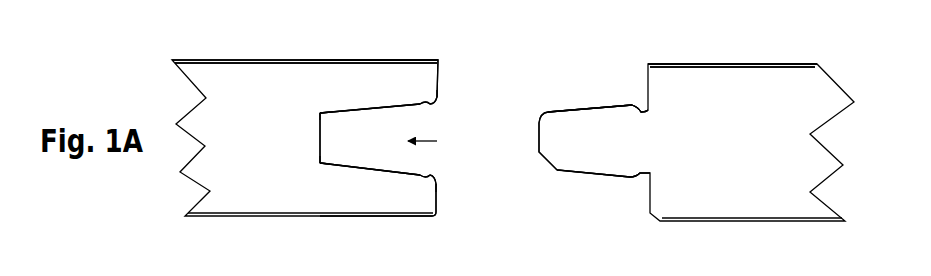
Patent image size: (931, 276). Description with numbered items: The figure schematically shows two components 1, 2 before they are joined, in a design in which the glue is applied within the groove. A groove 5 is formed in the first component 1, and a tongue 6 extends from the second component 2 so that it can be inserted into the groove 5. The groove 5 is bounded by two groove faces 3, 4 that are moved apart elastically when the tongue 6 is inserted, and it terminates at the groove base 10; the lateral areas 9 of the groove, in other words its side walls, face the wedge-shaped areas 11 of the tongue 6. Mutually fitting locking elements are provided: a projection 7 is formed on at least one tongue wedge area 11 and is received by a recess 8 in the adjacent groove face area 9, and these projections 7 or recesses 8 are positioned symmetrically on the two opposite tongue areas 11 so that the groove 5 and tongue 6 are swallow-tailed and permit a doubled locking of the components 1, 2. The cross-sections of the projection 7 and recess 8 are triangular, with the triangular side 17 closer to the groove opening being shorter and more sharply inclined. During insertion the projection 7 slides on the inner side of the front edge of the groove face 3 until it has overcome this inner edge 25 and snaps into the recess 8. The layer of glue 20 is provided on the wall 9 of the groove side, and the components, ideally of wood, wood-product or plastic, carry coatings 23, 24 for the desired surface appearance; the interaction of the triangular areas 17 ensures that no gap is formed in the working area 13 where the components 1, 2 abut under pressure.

The component 1 is at (217, 75).
The component 2 is at (728, 88).
The groove face 3 is at (355, 80).
The groove face 4 is at (378, 196).
The groove 5 is at (432, 144).
The tongue 6 is at (563, 153).
The projection 7 is at (627, 100).
The recess 8 is at (422, 110).
The lateral area of the groove 9 is at (325, 113).
The groove base 10 is at (322, 140).
The wedge-shaped area of the tongue 11 is at (577, 107).
The working area 13 is at (391, 57).
The triangular side 17 is at (640, 107).
The layer of glue 20 is at (347, 113).
The coating 23 is at (284, 62).
The coating 24 is at (758, 67).
The inner edge 25 is at (433, 97).